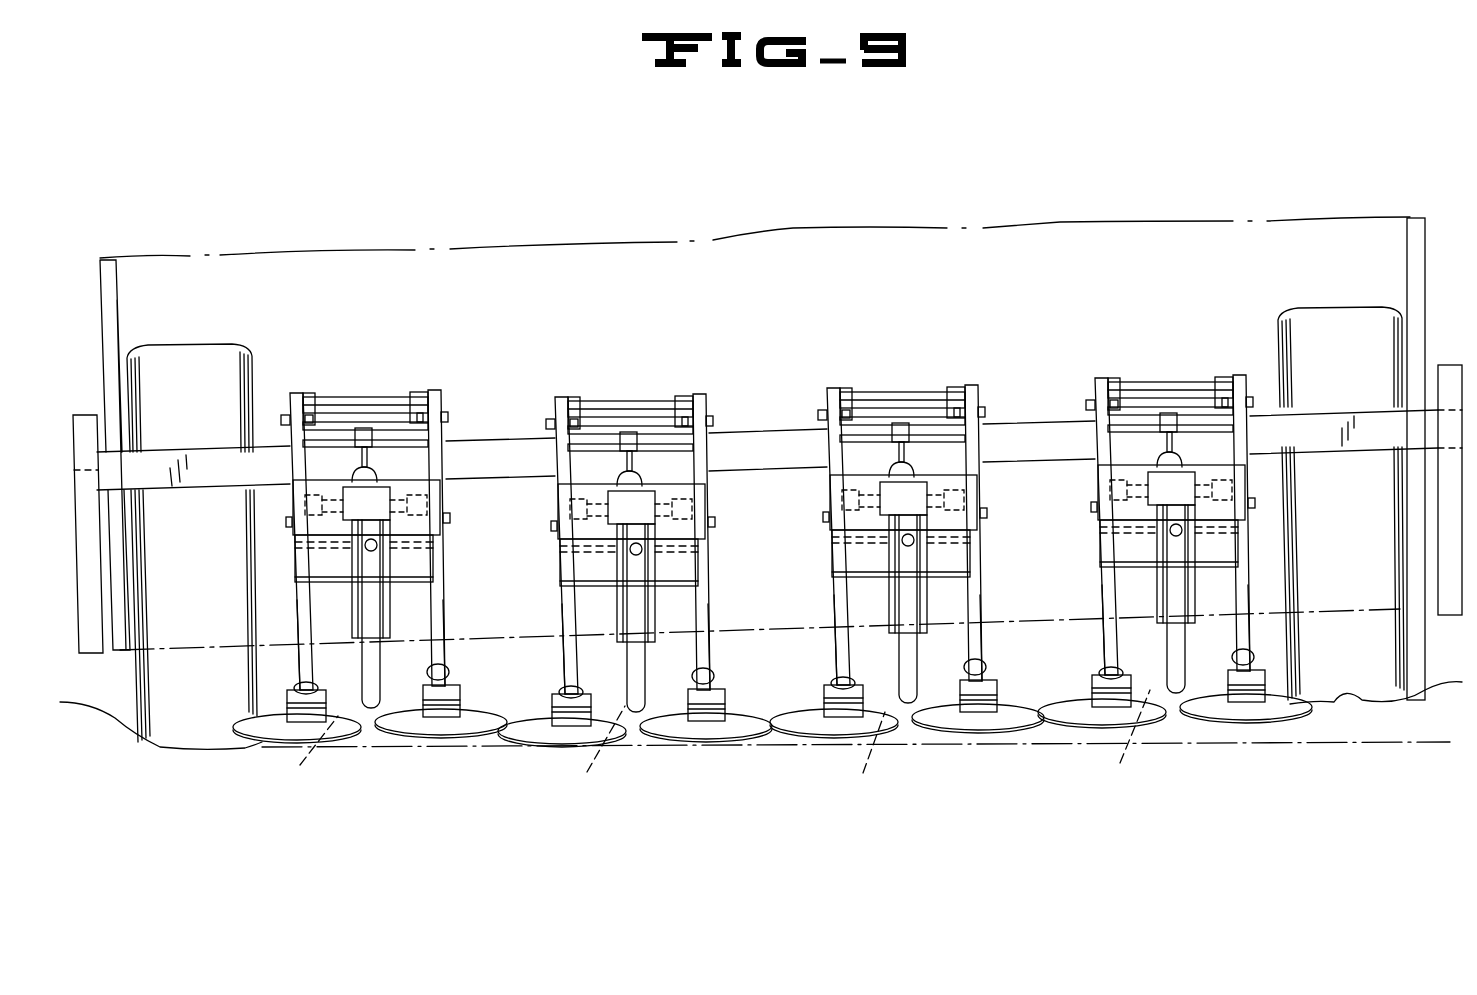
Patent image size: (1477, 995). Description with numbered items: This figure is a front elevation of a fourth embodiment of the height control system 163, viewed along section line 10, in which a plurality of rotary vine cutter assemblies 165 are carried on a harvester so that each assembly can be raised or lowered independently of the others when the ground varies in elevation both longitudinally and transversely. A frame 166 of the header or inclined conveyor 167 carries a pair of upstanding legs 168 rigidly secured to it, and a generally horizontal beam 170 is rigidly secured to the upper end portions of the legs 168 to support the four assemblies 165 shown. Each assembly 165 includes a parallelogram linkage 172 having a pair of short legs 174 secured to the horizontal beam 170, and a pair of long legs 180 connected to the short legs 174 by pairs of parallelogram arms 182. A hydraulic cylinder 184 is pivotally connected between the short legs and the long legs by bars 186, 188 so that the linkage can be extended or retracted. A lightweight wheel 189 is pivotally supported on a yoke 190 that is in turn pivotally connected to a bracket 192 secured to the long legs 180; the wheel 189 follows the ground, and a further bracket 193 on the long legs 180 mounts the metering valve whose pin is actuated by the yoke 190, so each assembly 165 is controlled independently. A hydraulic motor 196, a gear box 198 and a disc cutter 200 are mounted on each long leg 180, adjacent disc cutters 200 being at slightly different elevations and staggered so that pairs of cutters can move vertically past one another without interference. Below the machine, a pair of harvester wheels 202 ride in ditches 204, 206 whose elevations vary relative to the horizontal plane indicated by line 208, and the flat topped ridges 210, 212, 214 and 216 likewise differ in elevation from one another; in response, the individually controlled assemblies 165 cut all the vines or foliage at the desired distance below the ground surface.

The section line 10- 10 is at (1455, 228).
The height control system 163 is at (764, 272).
The rotary vine cutter assembly 165 is at (383, 380).
The frame 166 is at (110, 258).
The header or inclined conveyor 167 is at (998, 230).
The upstanding legs 168 is at (100, 540).
The horizontal beam 170 is at (245, 481).
The parallelogram linkage 172 is at (435, 391).
The short legs 174 is at (285, 428).
The long legs 180 is at (572, 610).
The parallelogram arms 182 is at (328, 372).
The hydraulic cylinder 184 is at (632, 472).
The bar 186 is at (333, 442).
The bar 188 is at (300, 560).
The lightweight wheel 189 is at (575, 666).
The yoke 190 is at (570, 588).
The bracket 192 is at (570, 512).
The bracket 193 is at (572, 550).
The hydraulic motor 196 is at (298, 686).
The gear box 198 is at (287, 699).
The disc cutter 200 is at (362, 735).
The wheels 202 is at (177, 346).
The ditch 204 is at (150, 745).
The ditch 206 is at (1365, 703).
The horizontal plane line 208 is at (1078, 748).
The flat topped ridge 210 is at (309, 756).
The flat topped ridge 212 is at (595, 759).
The flat topped ridge 214 is at (866, 759).
The flat topped ridge 216 is at (1126, 743).